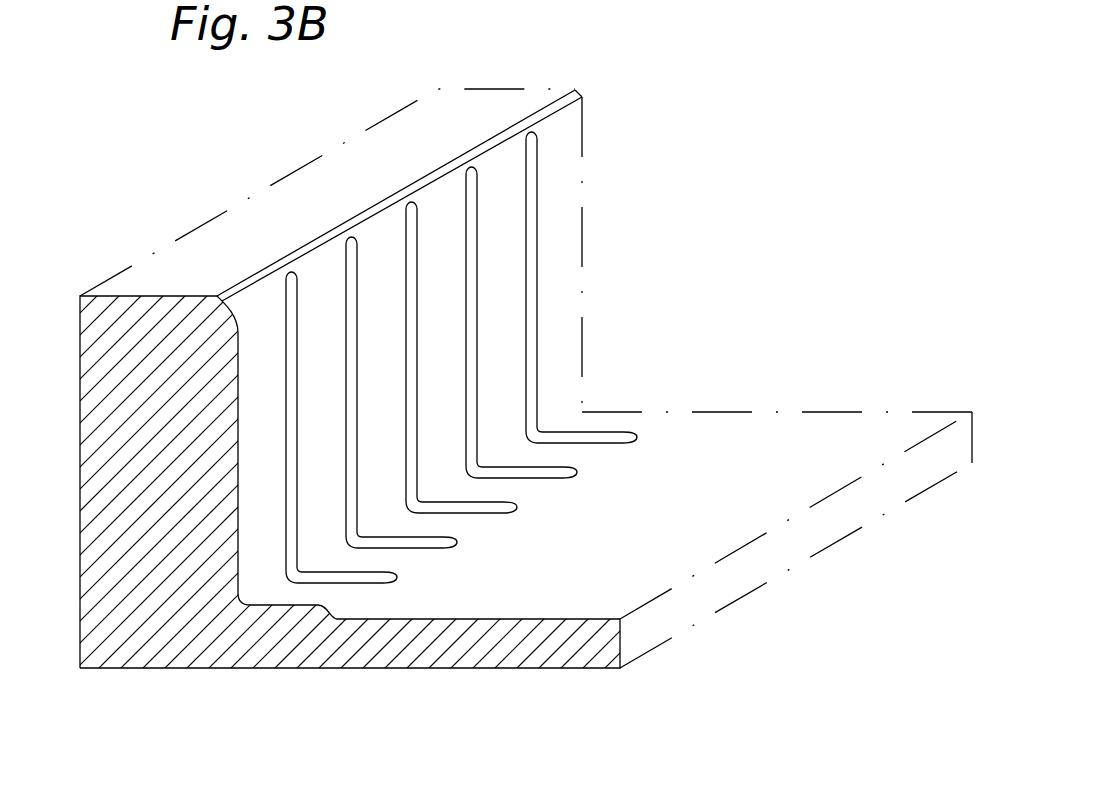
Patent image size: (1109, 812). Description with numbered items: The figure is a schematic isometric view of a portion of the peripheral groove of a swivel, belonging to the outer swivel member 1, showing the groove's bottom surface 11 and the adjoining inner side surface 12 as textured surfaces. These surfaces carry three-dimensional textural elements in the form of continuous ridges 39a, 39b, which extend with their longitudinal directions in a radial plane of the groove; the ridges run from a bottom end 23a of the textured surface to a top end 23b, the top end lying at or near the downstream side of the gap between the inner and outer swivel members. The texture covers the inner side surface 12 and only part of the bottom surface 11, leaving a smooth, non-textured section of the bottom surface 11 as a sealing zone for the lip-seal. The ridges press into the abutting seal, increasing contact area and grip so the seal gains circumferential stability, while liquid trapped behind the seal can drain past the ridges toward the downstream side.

The outer swivel member 1 is at (222, 240).
The bottom surface 11 is at (322, 606).
The inner side surface 12 is at (123, 318).
The bottom end of the textured surface 23a is at (572, 473).
The top end of the textured surface 23b is at (355, 238).
The ridge 39a is at (535, 210).
The ridge 39b is at (592, 437).